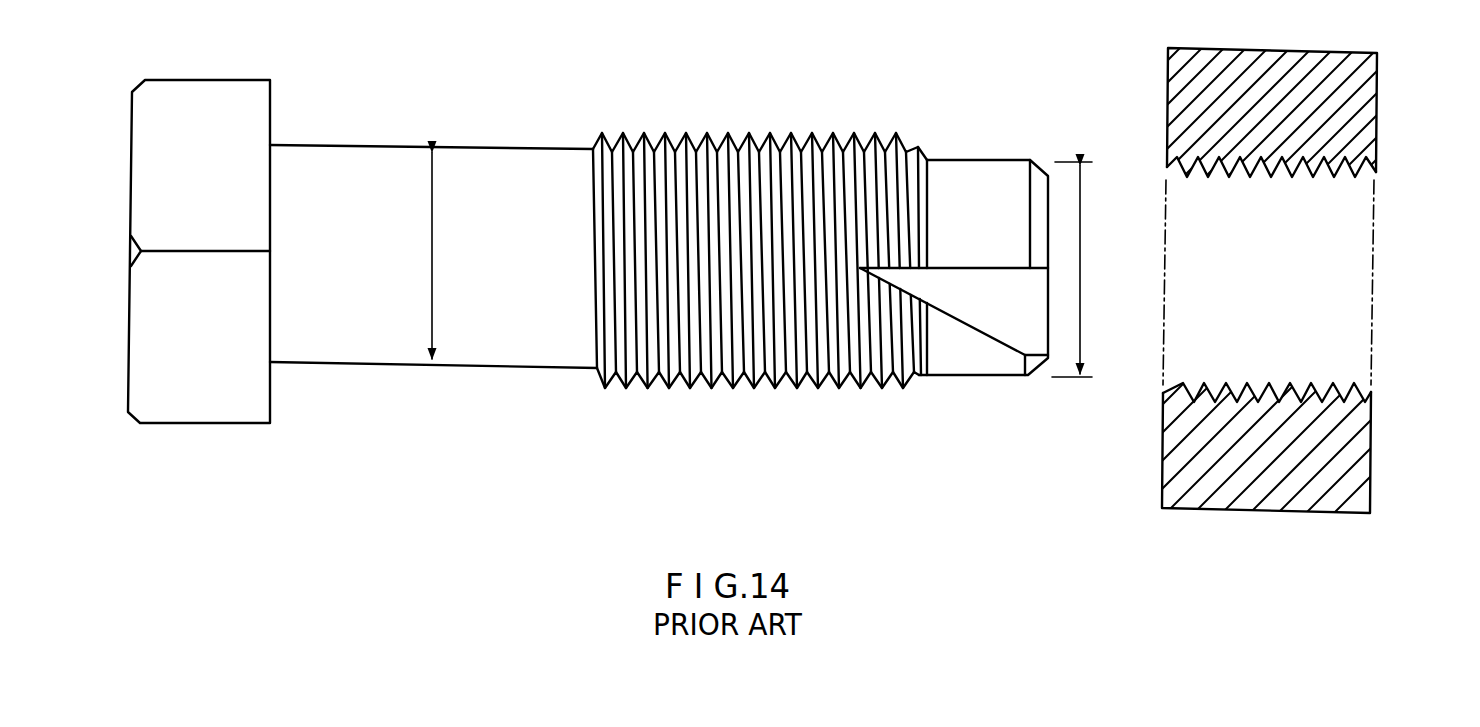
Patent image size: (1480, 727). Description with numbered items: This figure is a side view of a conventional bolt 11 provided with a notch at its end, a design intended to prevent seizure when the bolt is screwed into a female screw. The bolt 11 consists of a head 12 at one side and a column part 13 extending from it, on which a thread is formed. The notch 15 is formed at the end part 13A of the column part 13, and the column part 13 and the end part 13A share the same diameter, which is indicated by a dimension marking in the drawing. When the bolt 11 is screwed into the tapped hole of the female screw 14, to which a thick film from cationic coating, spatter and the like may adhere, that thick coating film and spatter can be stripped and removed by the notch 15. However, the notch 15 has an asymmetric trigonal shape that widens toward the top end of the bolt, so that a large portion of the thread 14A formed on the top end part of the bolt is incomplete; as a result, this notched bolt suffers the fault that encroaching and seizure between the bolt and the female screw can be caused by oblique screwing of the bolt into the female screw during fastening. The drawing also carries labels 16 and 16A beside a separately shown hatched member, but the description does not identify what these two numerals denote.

The bolt 11 is at (519, 113).
The head 12 is at (186, 403).
The column part 13 is at (343, 141).
The end part 13A is at (1002, 160).
The female screw 14 is at (892, 122).
The thread 14A is at (919, 131).
The notch 15 is at (966, 308).
The nut 16 is at (1381, 107).
The nut bore 16A is at (1268, 282).